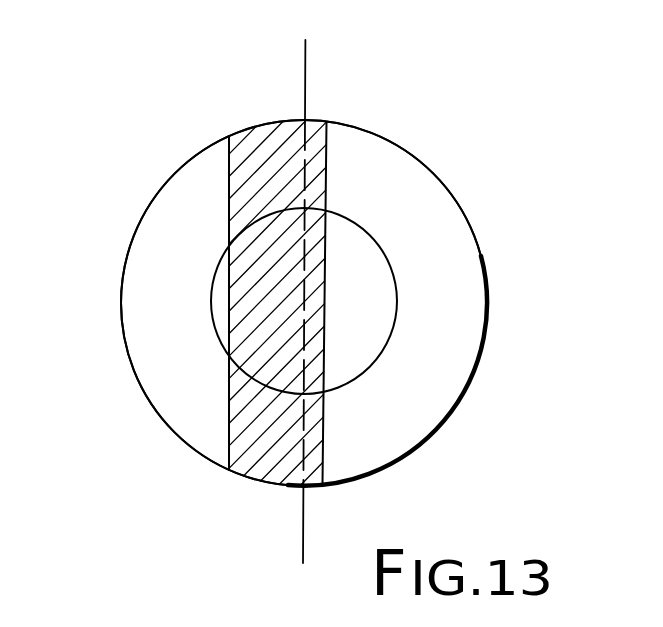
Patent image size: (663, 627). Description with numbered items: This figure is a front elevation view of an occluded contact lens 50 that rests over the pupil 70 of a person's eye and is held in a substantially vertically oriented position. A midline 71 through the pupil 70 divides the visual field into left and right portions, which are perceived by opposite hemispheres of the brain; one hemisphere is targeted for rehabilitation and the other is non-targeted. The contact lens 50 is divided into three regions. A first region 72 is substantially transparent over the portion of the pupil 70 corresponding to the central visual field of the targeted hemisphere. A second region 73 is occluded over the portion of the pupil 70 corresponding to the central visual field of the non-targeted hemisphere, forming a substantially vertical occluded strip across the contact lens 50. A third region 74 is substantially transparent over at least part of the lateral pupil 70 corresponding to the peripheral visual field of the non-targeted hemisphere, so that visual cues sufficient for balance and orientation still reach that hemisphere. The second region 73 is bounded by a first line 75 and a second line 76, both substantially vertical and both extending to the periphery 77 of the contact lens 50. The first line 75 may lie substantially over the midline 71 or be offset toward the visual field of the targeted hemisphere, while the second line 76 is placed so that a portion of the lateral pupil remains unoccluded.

The contact lens 50 is at (168, 173).
The pupil 70 is at (352, 218).
The midline 71 is at (300, 22).
The first region 72 is at (355, 284).
The second region 73 is at (293, 303).
The third region 74 is at (213, 300).
The first line 75 is at (312, 415).
The second line 76 is at (229, 183).
The periphery 77 is at (433, 172).